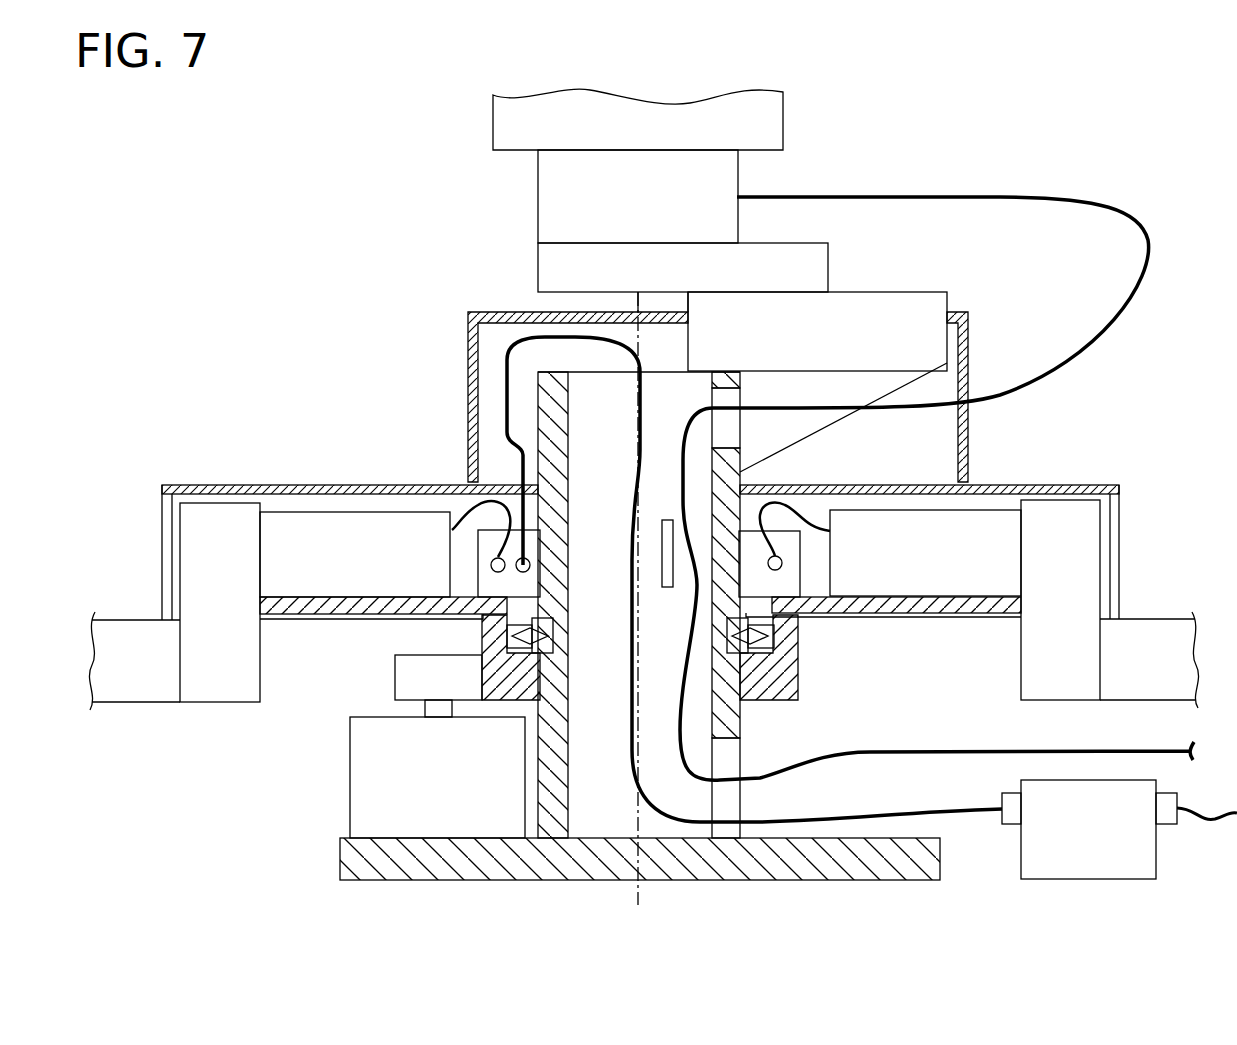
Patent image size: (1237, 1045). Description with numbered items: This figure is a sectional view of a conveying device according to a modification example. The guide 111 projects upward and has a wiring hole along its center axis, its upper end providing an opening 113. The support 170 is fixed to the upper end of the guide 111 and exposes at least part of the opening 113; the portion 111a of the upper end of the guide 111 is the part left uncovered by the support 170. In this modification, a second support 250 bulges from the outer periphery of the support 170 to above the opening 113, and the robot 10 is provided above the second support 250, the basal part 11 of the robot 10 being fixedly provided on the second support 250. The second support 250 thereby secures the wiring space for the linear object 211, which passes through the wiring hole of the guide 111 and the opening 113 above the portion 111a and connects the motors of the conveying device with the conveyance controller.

The robot 10 is at (793, 117).
The basal part 11 is at (715, 178).
The second support 250 is at (552, 268).
The support 170 is at (725, 325).
The guide 111 is at (540, 762).
The opening 113 is at (592, 372).
The portion 111a is at (553, 372).
The linear object 211 is at (673, 825).